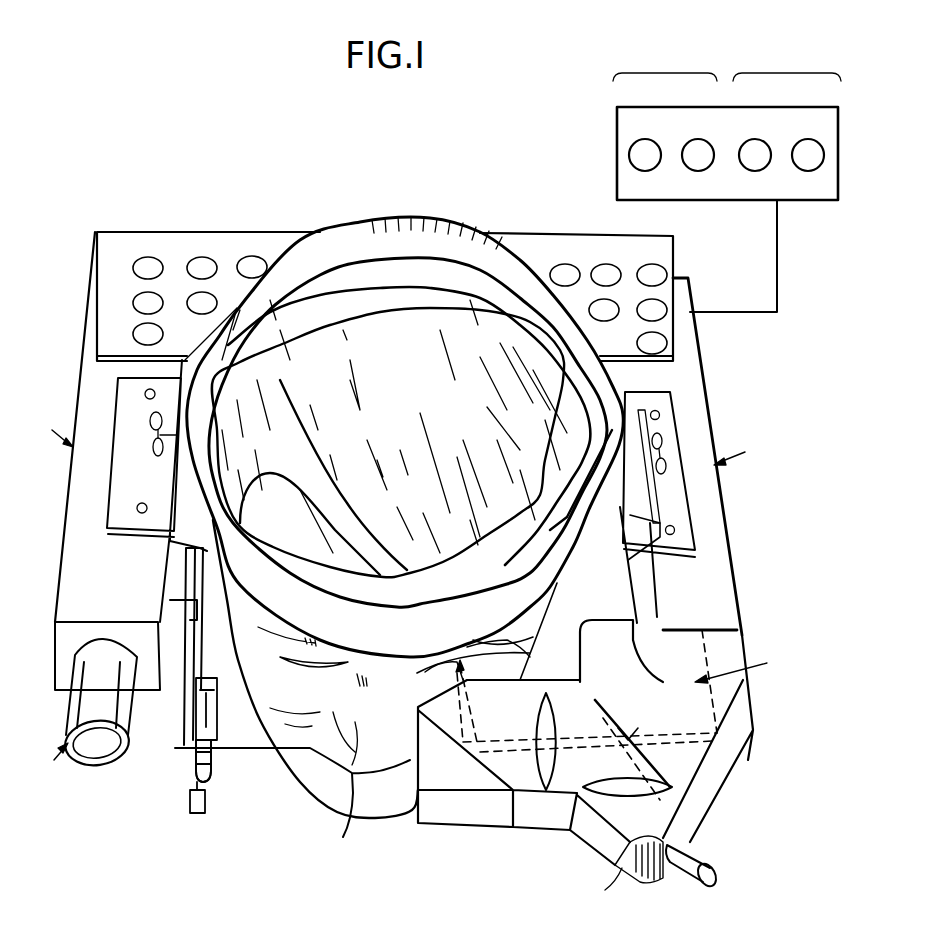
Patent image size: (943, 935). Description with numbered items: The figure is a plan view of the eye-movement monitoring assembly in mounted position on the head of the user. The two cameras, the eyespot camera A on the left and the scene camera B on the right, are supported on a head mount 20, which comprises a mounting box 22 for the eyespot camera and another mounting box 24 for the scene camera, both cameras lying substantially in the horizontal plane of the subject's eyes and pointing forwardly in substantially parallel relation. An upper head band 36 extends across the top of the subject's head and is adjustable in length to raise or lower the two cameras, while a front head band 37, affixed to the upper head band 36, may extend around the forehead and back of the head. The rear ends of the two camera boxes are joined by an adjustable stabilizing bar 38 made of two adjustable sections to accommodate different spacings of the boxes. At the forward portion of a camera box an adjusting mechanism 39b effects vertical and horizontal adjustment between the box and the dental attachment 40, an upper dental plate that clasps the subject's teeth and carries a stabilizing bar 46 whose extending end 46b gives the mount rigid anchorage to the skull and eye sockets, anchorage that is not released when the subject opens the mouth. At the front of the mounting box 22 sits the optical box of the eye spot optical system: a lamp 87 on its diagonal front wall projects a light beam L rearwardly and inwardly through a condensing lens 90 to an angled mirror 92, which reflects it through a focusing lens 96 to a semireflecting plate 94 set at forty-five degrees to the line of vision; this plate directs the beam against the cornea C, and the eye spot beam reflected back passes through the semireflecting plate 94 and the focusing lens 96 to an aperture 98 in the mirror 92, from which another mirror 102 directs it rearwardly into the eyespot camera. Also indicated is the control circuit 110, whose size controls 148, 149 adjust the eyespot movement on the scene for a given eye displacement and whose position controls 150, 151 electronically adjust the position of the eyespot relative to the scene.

The head mount 20 is at (68, 320).
The mounting box 22 is at (703, 392).
The mounting box 24 is at (92, 356).
The upper head band 36 is at (365, 278).
The front head band 37 is at (571, 559).
The stabilizing bar 38 is at (242, 232).
The adjusting mechanism 39b is at (188, 792).
The dental attachment 40 is at (350, 800).
The stabilizing bar 46 is at (245, 748).
The right extending end 46b is at (188, 750).
The lamp 87 is at (712, 880).
The condensing lens 90 is at (598, 784).
The angled reflecting plate or mirror 92 is at (600, 710).
The semireflecting plate 94 is at (477, 763).
The focusing lens 96 is at (549, 714).
The aperture 98 is at (628, 737).
The mirror 102 is at (705, 803).
The control circuit 110 is at (735, 163).
The size control 148 is at (752, 150).
The size control 149 is at (808, 150).
The position control 150 is at (650, 150).
The position control 151 is at (697, 150).